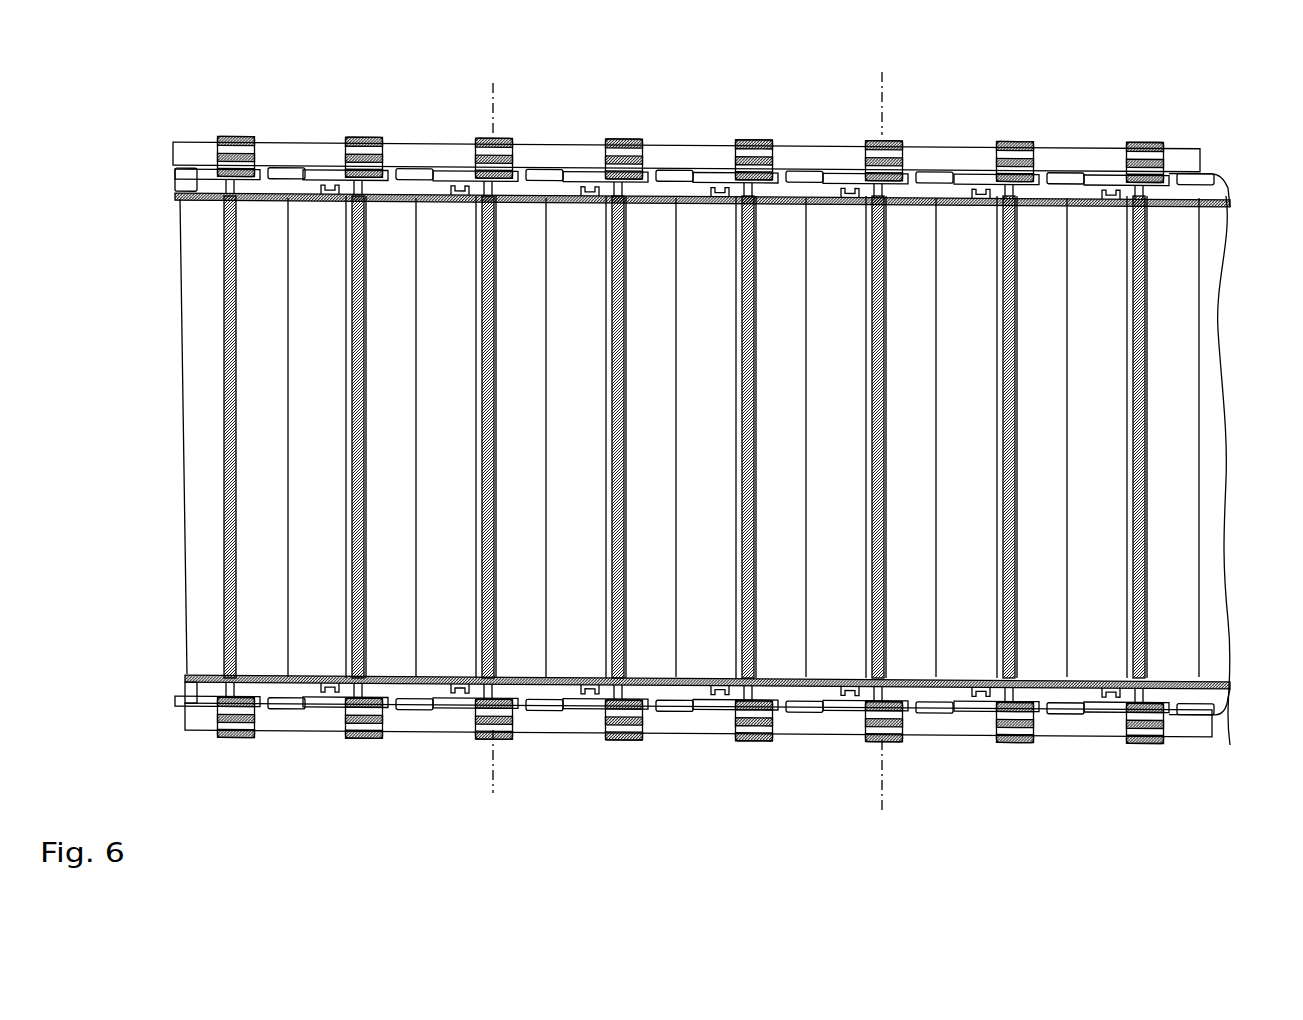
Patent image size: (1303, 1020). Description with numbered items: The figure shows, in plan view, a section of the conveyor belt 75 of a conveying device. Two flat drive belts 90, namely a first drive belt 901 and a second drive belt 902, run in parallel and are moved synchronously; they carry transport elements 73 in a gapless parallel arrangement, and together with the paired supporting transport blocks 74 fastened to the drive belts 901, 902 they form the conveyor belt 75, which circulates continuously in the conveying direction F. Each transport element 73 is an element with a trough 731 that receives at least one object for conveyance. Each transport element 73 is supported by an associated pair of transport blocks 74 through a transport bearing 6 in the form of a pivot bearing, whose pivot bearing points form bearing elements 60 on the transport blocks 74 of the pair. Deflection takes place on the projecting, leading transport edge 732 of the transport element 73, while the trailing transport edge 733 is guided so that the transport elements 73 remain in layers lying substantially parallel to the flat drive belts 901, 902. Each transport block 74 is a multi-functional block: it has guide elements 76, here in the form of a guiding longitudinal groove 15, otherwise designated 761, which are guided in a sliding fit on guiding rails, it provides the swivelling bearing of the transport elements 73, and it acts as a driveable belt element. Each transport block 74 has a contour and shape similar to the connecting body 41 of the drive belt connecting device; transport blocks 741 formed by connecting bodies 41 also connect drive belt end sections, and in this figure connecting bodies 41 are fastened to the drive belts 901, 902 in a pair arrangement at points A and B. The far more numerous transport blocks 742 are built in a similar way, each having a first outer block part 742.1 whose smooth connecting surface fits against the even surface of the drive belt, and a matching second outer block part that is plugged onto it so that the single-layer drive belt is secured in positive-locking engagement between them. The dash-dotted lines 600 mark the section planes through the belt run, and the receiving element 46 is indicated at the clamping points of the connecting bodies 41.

The transport bearing 6 is at (225, 700).
The conveyor belt 75 is at (167, 238).
The drive belts 90 is at (725, 440).
The first drive belt 901 is at (1175, 740).
The second drive belt 902 is at (1185, 150).
The guide elements 76 is at (640, 180).
The guiding longitudinal groove 761 is at (702, 441).
The receiving element 46 is at (252, 165).
The guiding longitudinal groove 15 is at (629, 440).
The transport block 74 is at (691, 429).
The connecting transport block 741 is at (240, 140).
The ordinary transport block 742 is at (627, 135).
The first outer block part 742.1 is at (610, 135).
The connecting body 41 is at (233, 132).
The bearing elements 60 is at (370, 185).
The transport element 73 is at (520, 222).
The trough 731 is at (418, 242).
The leading transport edge 732 is at (227, 445).
The trailing transport edge 733 is at (1133, 517).
The section line 600 is at (530, 65).
The point A is at (1031, 447).
The point B is at (232, 431).
The conveying direction F is at (73, 449).